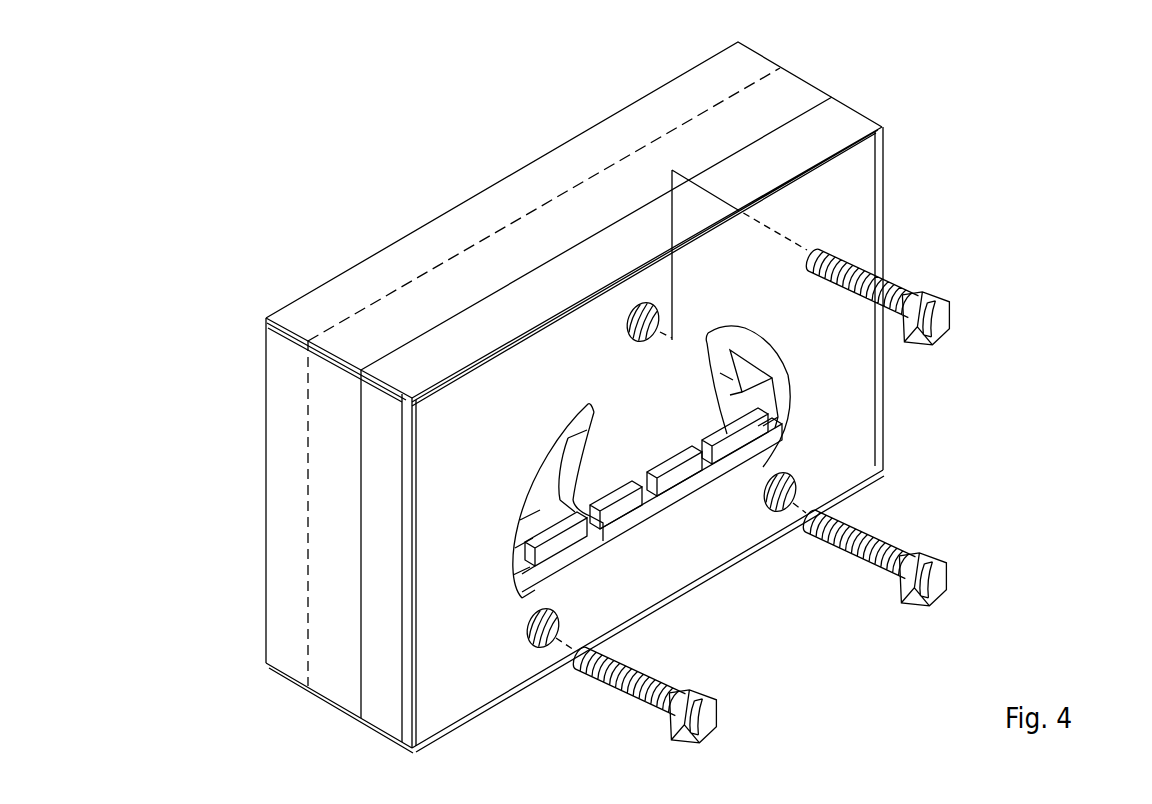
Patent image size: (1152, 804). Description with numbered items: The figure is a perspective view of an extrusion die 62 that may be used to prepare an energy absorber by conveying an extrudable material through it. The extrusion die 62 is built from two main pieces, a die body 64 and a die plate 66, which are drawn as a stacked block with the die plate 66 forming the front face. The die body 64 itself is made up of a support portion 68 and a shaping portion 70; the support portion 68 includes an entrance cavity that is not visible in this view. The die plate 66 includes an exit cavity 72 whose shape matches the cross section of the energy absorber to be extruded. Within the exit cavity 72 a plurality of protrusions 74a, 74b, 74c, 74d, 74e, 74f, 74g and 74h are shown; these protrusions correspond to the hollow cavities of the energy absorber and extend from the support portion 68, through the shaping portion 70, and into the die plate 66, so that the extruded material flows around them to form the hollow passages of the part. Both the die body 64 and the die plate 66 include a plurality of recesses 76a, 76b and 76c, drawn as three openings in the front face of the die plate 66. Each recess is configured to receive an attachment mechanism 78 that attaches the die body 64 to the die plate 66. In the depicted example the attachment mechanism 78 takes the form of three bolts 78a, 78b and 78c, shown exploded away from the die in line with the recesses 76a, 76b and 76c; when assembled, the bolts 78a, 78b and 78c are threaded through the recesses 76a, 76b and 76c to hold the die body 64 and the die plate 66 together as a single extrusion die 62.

The extrusion die 62 is at (293, 233).
The die body 64 is at (290, 683).
The die plate 66 is at (385, 720).
The support portion 68 is at (280, 422).
The shaping portion 70 is at (327, 382).
The exit cavity 72 is at (785, 415).
The protrusion 74a is at (530, 592).
The protrusion 74b is at (623, 518).
The protrusion 74c is at (682, 485).
The protrusion 74d is at (765, 440).
The protrusion 74e is at (540, 487).
The protrusion 74f is at (533, 537).
The protrusion 74g is at (750, 363).
The protrusion 74h is at (767, 405).
The recess 76a is at (643, 305).
The recess 76b is at (538, 648).
The recess 76c is at (780, 510).
The attachment mechanism 78 is at (1033, 270).
The bolt 78a is at (893, 278).
The bolt 78b is at (663, 682).
The bolt 78c is at (890, 540).